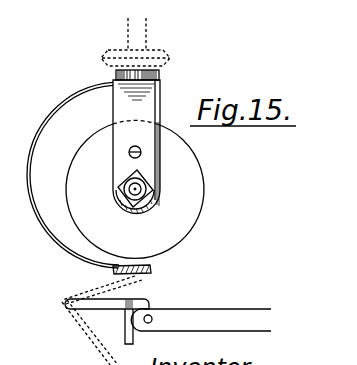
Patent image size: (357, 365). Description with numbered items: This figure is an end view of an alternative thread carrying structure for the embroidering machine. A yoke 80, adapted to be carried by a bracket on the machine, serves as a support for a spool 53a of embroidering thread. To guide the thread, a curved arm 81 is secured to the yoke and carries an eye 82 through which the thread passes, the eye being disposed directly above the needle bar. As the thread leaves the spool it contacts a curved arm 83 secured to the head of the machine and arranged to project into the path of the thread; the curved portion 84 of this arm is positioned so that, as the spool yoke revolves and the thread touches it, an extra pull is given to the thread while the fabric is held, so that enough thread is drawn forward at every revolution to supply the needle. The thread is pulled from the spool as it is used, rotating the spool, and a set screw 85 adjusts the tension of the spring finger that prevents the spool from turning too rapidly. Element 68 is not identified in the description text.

The swivel nut 68 is at (169, 54).
The spool 53a is at (150, 150).
The yoke 80 is at (135, 189).
The curved arm 81 is at (29, 168).
The eye 82 is at (151, 272).
The curved arm 83 is at (106, 303).
The curved portion 84 is at (62, 301).
The set screw 85 is at (127, 152).